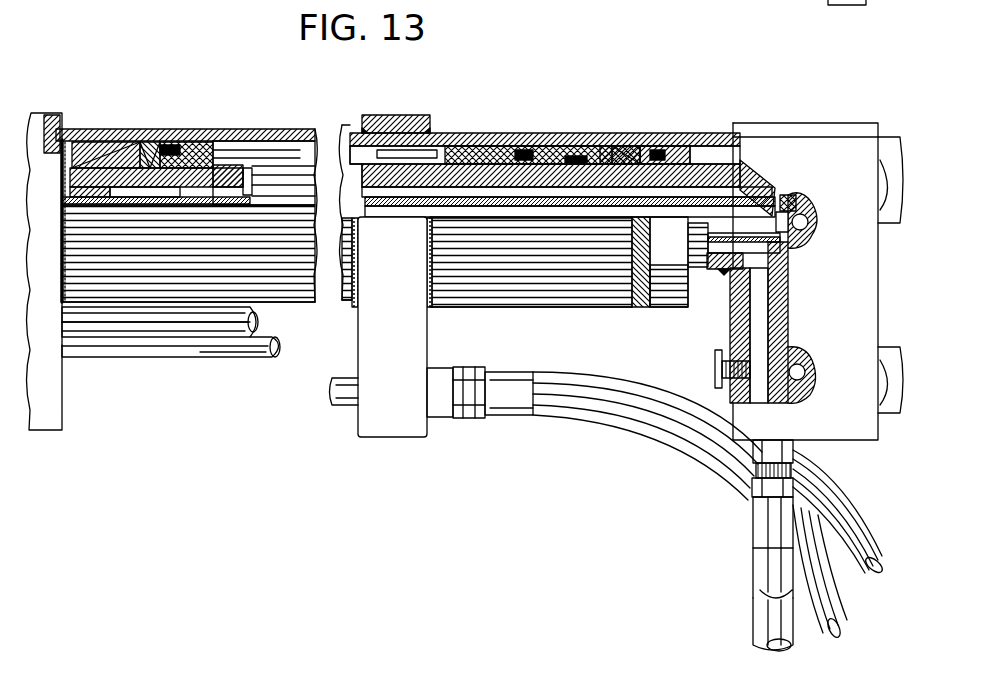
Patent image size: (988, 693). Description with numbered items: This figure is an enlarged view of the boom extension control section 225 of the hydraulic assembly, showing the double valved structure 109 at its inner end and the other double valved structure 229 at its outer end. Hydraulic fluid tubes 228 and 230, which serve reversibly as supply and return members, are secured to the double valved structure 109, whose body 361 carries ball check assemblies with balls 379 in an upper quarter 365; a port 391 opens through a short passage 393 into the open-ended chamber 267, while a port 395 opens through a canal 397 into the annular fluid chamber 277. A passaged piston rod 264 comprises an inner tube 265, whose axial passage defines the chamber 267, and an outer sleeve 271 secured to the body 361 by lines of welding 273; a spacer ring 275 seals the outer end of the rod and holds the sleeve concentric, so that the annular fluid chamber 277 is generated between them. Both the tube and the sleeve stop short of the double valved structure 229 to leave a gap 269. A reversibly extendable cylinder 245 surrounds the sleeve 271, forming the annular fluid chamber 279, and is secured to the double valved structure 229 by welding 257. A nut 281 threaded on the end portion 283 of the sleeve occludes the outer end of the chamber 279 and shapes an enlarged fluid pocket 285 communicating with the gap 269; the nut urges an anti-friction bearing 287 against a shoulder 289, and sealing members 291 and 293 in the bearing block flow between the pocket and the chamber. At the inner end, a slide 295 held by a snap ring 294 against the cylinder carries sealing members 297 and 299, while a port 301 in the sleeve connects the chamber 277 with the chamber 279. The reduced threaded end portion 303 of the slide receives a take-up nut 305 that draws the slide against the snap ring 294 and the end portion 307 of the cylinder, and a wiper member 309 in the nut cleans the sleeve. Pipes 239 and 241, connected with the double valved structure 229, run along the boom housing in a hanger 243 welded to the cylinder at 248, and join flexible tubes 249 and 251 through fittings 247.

The double valved structure 109 is at (828, 150).
The boom extension control section 225 is at (300, 100).
The hydraulic fluid tube 228 is at (760, 580).
The double valved structure 229 is at (46, 113).
The hydraulic fluid tube 230 is at (755, 625).
The pipe 239 is at (212, 337).
The pipe 241 is at (256, 357).
The hanger 243 is at (385, 437).
The reversibly extendable cylinder 245 is at (225, 129).
The fitting 247 is at (452, 417).
The welding 248 is at (436, 307).
The flexible tube 249 is at (840, 605).
The flexible tube 251 is at (840, 492).
The welding 257 is at (60, 128).
The passaged piston rod 264 is at (484, 150).
The inner tube 265 is at (710, 172).
The open-ended chamber 267 is at (455, 222).
The gap 269 is at (62, 200).
The outer sleeve 271 is at (375, 120).
The lines of welding 273 is at (726, 272).
The spacer ring 275 is at (185, 145).
The annular fluid chamber 277 is at (445, 160).
The annular fluid chamber 279 is at (292, 148).
The nut 281 is at (145, 142).
The end portion of sleeve 283 is at (65, 236).
The enlarged fluid pocket 285 is at (85, 150).
The annular anti-friction bearing 287 is at (158, 187).
The shoulder 289 is at (232, 165).
The annular sealing member 291 is at (165, 204).
The annular sealing member 293 is at (180, 147).
The snap ring 294 is at (606, 146).
The axially elongated slide 295 is at (622, 150).
The annular sealing member 297 is at (523, 150).
The annular sealing member 299 is at (576, 156).
The port 301 is at (247, 168).
The end portion of slide 303 is at (658, 150).
The take-up nut 305 is at (670, 307).
The end portion of cylinder 307 is at (634, 146).
The wiper member 309 is at (680, 146).
The body 361 is at (858, 296).
The upper quarter 365 is at (815, 240).
The ball 379 is at (812, 225).
The port 391 is at (815, 215).
The short bore or passage 393 is at (788, 198).
The port 395 is at (790, 368).
The bore or canal 397 is at (760, 302).